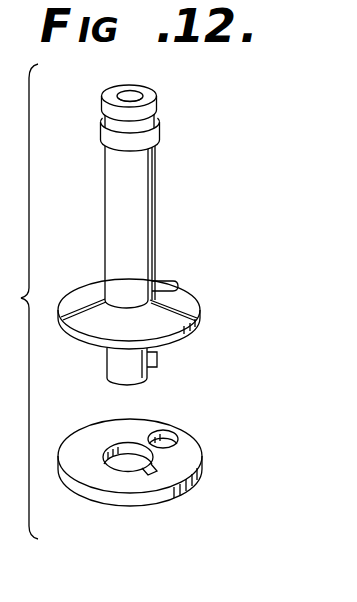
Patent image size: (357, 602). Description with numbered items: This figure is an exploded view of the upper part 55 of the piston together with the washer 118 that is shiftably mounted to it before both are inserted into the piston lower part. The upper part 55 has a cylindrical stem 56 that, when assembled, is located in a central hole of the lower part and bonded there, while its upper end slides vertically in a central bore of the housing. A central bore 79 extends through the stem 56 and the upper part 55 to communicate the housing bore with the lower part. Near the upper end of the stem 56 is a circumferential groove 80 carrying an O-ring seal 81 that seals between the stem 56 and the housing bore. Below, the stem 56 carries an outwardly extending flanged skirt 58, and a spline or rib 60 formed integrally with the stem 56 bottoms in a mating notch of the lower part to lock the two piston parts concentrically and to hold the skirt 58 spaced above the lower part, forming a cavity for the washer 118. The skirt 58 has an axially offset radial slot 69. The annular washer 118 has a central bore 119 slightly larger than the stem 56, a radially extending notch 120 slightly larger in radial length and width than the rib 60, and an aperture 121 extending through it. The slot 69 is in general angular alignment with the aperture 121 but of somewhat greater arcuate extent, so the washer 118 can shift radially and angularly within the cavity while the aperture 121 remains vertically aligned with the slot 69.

The upper part 55 is at (167, 223).
The cylindrical stem 56 is at (113, 191).
The flanged skirt 58 is at (82, 296).
The spline or rib 60 is at (160, 353).
The radial slot 69 is at (178, 286).
The central bore 79 is at (133, 93).
The circumferential groove 80 is at (102, 124).
The O-ring seal 81 is at (160, 119).
The washer 118 is at (208, 445).
The central bore 119 is at (124, 447).
The radially extending notch 120 is at (152, 473).
The aperture 121 is at (164, 439).